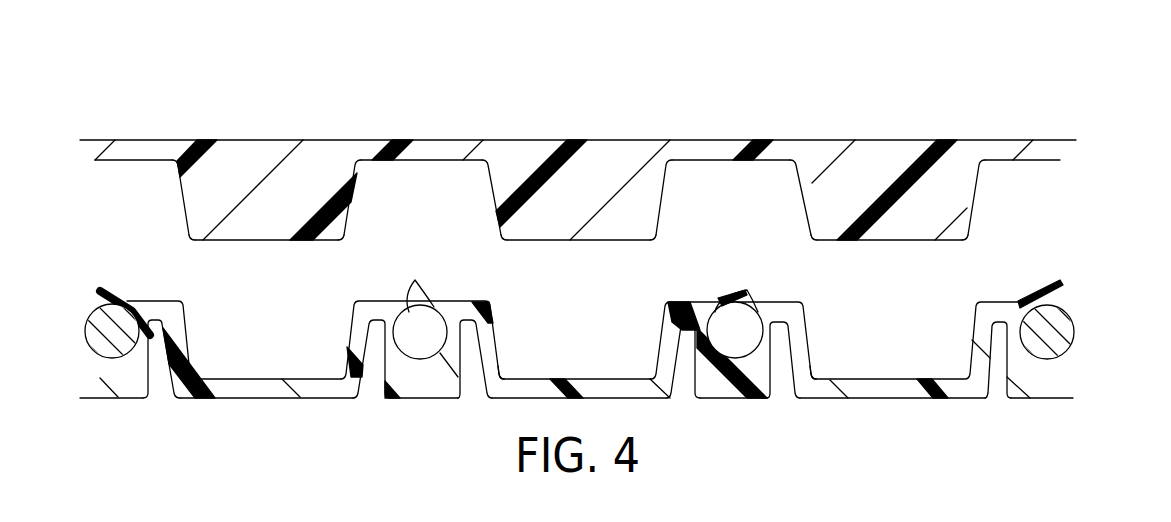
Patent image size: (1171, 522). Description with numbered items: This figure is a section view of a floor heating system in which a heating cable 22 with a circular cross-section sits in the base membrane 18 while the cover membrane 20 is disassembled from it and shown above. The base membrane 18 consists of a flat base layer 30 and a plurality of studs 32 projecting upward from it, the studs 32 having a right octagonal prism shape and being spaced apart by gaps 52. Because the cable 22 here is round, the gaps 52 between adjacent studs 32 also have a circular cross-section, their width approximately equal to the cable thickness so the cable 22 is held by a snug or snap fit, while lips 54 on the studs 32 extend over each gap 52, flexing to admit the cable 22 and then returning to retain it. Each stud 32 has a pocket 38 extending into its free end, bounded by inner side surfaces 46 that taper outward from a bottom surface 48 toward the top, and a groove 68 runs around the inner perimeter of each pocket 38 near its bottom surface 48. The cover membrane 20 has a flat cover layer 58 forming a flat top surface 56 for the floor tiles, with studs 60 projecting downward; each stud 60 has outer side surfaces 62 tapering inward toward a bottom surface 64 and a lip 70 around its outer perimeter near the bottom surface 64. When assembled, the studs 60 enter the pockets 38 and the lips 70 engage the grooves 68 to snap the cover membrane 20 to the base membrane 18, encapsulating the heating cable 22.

The base membrane 18 is at (1030, 272).
The cover membrane 20 is at (1050, 115).
The heating cable 22 is at (92, 338).
The base layer 30 is at (267, 391).
The studs 32 is at (100, 290).
The pocket 38 is at (585, 345).
The inner side surfaces 46 is at (500, 340).
The bottom surface 48 is at (596, 378).
The gap 52 is at (420, 337).
The lips 54 is at (414, 284).
The flat top surface 56 is at (633, 140).
The cover layer 58 is at (430, 150).
The studs 60 is at (337, 192).
The outer side surfaces 62 is at (182, 192).
The bottom surface 64 is at (268, 241).
The groove 68 is at (194, 378).
The lip 70 is at (188, 238).